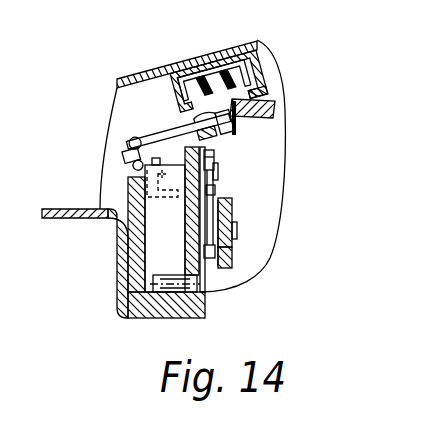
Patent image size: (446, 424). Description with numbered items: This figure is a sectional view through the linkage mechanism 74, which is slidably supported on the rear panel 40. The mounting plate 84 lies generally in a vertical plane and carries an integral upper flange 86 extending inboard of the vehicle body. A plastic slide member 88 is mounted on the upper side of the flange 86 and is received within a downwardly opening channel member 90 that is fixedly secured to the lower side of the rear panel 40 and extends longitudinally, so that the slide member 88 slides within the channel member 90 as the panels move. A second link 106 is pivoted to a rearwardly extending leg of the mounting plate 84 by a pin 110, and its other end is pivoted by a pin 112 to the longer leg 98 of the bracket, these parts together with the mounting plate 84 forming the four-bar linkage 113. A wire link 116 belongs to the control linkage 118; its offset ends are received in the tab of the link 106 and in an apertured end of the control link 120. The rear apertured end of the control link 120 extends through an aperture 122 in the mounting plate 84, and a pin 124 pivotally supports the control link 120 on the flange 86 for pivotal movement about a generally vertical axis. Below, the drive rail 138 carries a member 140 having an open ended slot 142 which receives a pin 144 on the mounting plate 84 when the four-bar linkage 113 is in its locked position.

The rear panel 40 is at (180, 65).
The slide member 88 is at (213, 73).
The channel member 90 is at (261, 47).
The upper flange 86 is at (261, 90).
The control link 120 is at (262, 114).
The pin 124 is at (282, 134).
The aperture 122 is at (190, 136).
The wire link 116 is at (132, 145).
The control linkage 118 is at (118, 124).
The open ended slot 142 is at (147, 193).
The drive rail 138 is at (97, 216).
The member 140 is at (138, 258).
The pin 144 is at (172, 294).
The mounting plate 84 is at (204, 179).
The pin 110 is at (210, 170).
The second link 106 is at (190, 206).
The longer leg 98 is at (233, 251).
The pin 112 is at (237, 231).
The four-bar linkage 113 is at (242, 264).
The linkage mechanism 74 is at (238, 284).